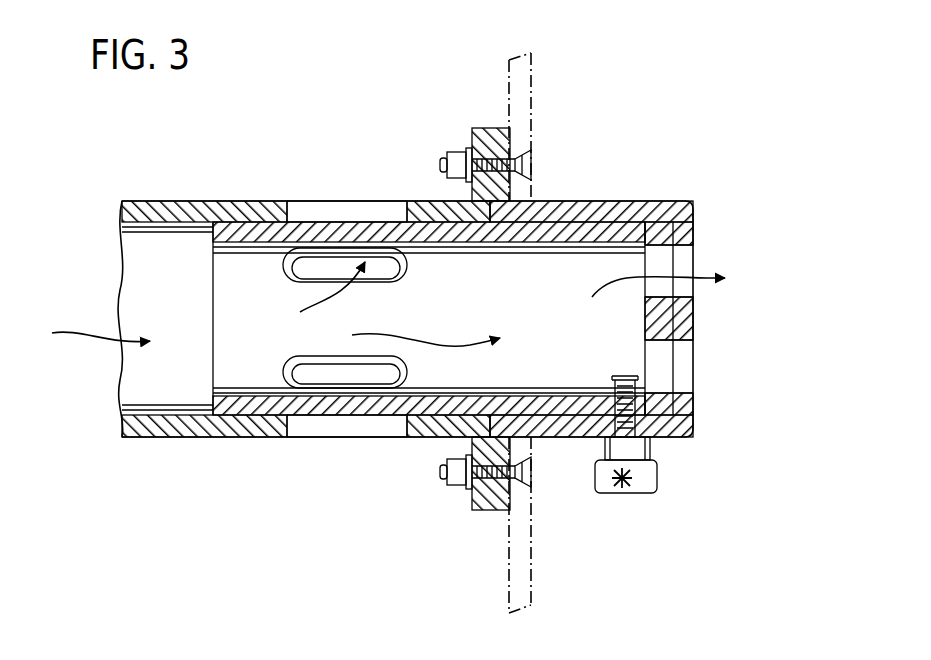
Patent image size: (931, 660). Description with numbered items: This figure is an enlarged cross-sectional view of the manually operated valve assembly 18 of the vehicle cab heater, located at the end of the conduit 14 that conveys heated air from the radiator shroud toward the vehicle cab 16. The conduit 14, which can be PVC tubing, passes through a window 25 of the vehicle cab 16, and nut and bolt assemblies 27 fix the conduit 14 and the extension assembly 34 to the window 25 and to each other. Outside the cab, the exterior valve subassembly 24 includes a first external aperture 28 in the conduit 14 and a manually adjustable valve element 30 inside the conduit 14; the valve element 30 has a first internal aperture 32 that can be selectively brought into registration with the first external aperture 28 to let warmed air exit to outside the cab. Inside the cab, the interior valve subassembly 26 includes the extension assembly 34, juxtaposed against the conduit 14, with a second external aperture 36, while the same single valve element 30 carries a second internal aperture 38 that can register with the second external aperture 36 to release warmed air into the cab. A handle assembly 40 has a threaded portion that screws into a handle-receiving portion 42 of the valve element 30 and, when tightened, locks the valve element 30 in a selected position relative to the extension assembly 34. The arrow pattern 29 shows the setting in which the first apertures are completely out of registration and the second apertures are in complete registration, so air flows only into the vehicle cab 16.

The conduit 14 is at (175, 201).
The vehicle cab 16 is at (614, 115).
The manually operated valve assembly 18 is at (415, 455).
The exterior valve subassembly 24 is at (340, 199).
The window 25 is at (518, 88).
The interior valve subassembly 26 is at (714, 241).
The nut and bolt assemblies 27 is at (537, 165).
The first external aperture 28 is at (290, 201).
The arrow pattern 29 is at (93, 338).
The valve element 30 is at (217, 362).
The first internal aperture 32 is at (290, 258).
The extension assembly 34 is at (650, 201).
The second external aperture 36 is at (683, 343).
The second internal aperture 38 is at (652, 345).
The handle assembly 40 is at (652, 478).
The handle-receiving portion 42 is at (607, 380).